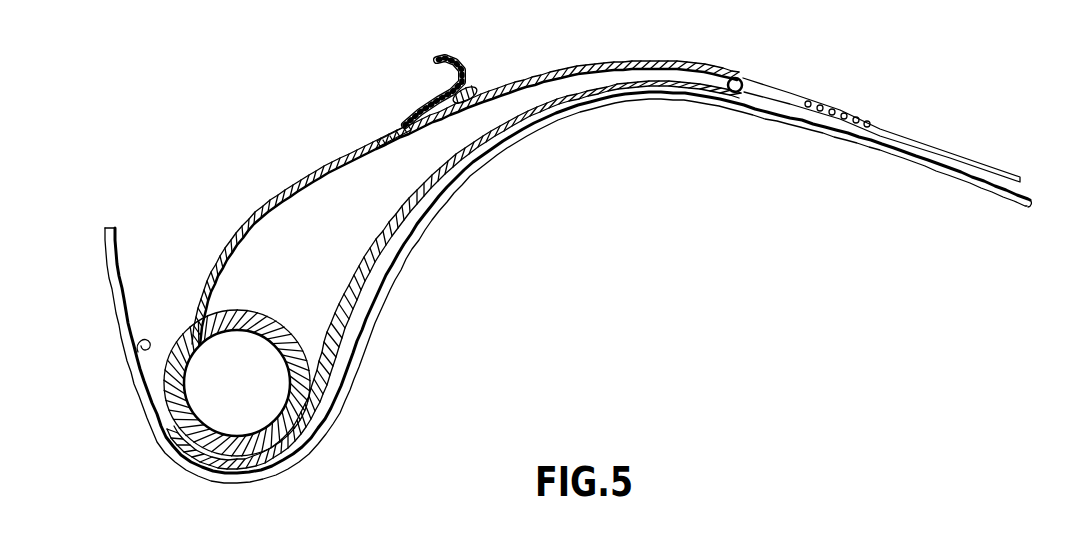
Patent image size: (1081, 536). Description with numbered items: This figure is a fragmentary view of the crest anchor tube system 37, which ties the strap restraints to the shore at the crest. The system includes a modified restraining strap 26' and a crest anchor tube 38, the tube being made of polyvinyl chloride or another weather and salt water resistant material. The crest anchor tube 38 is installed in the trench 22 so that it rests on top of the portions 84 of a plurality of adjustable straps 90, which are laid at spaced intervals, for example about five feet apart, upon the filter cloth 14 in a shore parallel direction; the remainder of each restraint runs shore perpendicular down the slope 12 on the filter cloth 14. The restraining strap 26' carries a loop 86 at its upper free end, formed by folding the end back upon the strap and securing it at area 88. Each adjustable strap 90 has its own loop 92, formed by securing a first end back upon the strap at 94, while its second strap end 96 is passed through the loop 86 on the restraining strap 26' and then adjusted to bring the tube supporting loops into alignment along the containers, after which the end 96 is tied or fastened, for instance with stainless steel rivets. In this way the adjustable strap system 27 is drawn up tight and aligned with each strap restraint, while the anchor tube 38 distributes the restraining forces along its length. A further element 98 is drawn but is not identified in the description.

The slope 12 is at (121, 332).
The filter cloth 14 is at (112, 236).
The trench 22 is at (145, 358).
The modified restraining strap 26' is at (884, 130).
The adjustable strap system 27 is at (552, 56).
The crest anchor tube system 37 is at (314, 156).
The crest anchor tube 38 is at (270, 322).
The strap portion 84 is at (187, 443).
The loop 86 is at (747, 75).
The securing area 88 is at (843, 112).
The adjustable strap 90 is at (465, 203).
The loop 92 is at (428, 102).
The securing point 94 is at (388, 134).
The second strap end 96 is at (452, 60).
The loop pad 98 is at (467, 88).